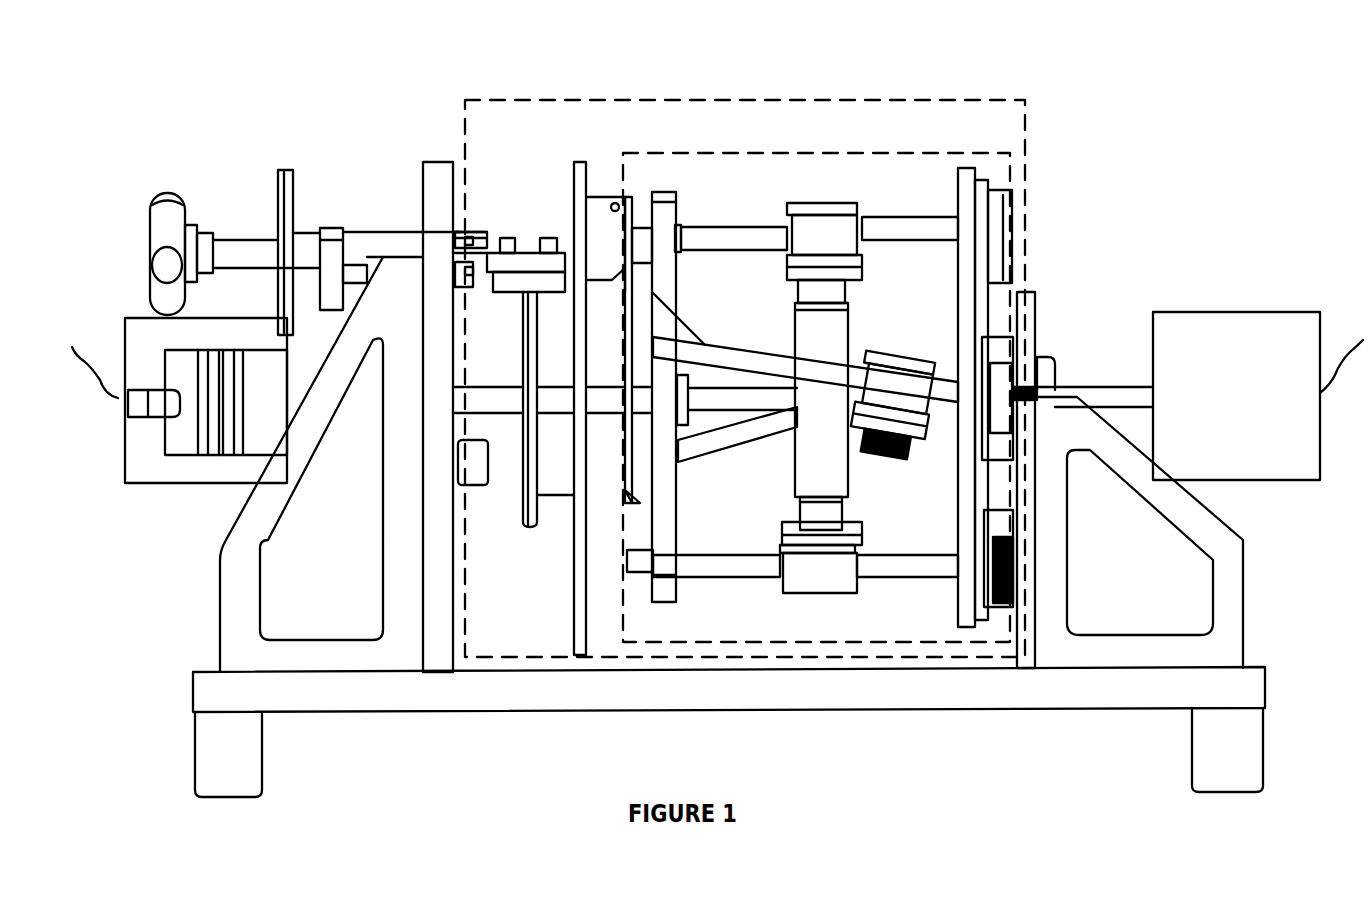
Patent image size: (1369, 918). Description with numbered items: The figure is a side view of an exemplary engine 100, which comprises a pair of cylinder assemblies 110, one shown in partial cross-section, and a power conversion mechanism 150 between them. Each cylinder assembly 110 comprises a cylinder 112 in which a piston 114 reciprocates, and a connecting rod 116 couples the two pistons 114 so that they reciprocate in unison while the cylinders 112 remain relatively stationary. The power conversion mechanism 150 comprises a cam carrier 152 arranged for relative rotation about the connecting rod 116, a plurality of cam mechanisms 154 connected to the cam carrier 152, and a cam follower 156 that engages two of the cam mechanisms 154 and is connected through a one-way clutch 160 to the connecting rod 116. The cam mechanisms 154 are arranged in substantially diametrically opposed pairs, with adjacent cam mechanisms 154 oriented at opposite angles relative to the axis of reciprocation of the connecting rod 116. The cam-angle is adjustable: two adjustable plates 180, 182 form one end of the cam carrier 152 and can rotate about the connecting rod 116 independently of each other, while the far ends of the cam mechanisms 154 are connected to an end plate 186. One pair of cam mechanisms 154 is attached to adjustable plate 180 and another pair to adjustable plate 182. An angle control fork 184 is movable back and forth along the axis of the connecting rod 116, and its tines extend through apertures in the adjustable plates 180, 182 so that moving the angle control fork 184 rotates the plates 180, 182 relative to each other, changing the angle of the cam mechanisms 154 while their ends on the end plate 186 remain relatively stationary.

The engine 100 is at (823, 65).
The cylinder assembly 110 is at (152, 332).
The cylinder 112 is at (180, 455).
The piston 114 is at (233, 455).
The connecting rod 116 is at (1088, 393).
The power conversion mechanism 150 is at (740, 100).
The cam carrier 152 is at (835, 642).
The cam mechanism 154 is at (717, 228).
The first cam follower 156 is at (847, 343).
The one-way clutch 160 is at (793, 390).
The adjustable plate 180 is at (632, 503).
The adjustable plate 182 is at (677, 520).
The angle control fork 184 is at (600, 215).
The end plate 186 is at (965, 477).